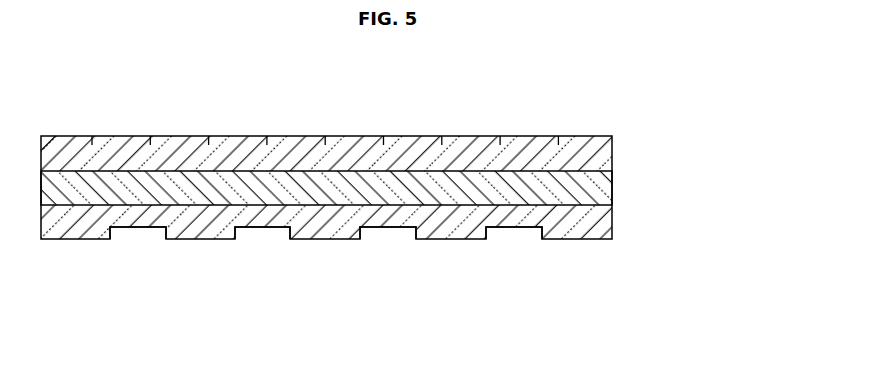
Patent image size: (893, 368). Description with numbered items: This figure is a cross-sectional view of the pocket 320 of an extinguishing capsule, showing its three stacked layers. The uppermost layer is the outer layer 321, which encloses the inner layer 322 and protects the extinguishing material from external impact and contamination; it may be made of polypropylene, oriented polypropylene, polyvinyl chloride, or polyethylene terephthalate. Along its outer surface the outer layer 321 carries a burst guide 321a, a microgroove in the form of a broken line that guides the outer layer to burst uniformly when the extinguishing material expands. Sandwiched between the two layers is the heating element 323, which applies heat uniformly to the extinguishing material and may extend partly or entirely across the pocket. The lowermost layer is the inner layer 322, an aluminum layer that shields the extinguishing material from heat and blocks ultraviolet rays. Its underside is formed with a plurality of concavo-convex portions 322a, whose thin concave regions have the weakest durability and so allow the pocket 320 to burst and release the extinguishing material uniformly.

The pocket 320 is at (680, 118).
The outer layer 321 is at (600, 152).
The burst guide 321a is at (502, 145).
The heating element 323 is at (600, 188).
The inner layer 322 is at (600, 230).
The concavo-convex portions 322a is at (542, 229).